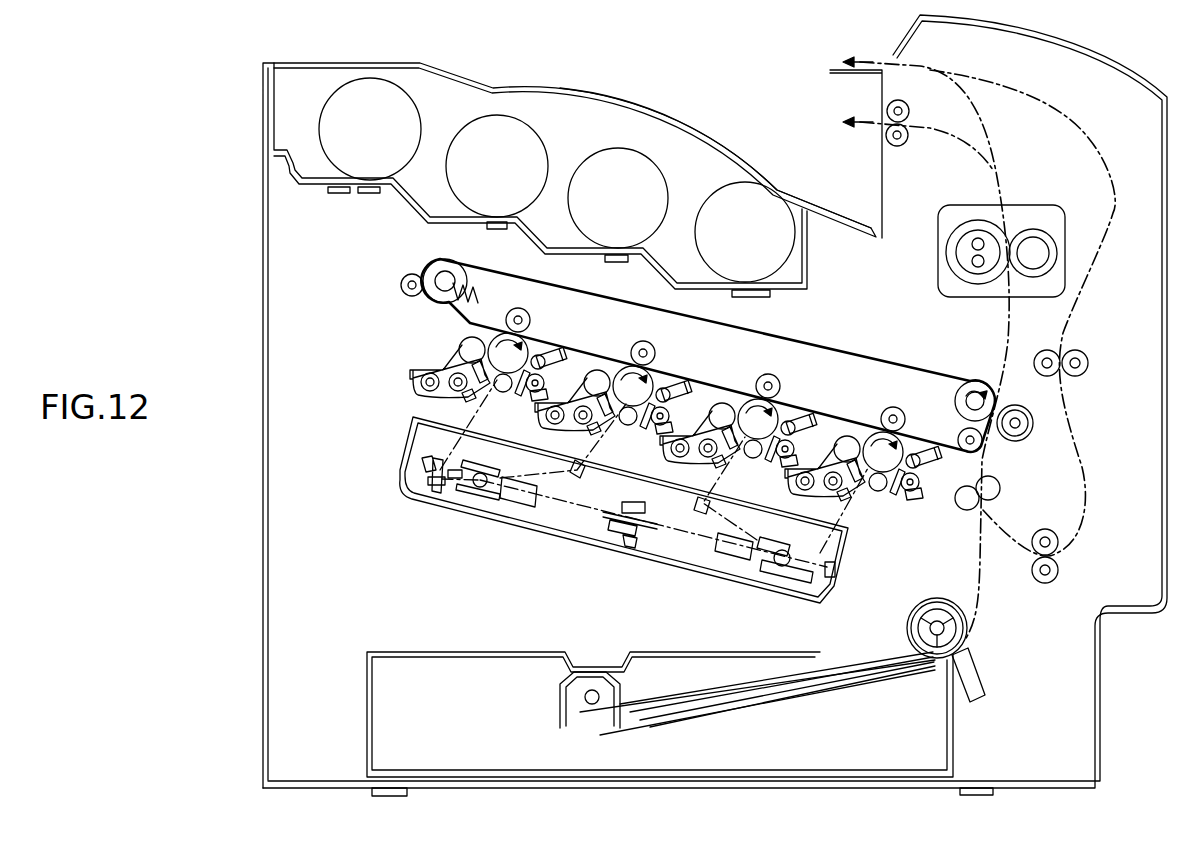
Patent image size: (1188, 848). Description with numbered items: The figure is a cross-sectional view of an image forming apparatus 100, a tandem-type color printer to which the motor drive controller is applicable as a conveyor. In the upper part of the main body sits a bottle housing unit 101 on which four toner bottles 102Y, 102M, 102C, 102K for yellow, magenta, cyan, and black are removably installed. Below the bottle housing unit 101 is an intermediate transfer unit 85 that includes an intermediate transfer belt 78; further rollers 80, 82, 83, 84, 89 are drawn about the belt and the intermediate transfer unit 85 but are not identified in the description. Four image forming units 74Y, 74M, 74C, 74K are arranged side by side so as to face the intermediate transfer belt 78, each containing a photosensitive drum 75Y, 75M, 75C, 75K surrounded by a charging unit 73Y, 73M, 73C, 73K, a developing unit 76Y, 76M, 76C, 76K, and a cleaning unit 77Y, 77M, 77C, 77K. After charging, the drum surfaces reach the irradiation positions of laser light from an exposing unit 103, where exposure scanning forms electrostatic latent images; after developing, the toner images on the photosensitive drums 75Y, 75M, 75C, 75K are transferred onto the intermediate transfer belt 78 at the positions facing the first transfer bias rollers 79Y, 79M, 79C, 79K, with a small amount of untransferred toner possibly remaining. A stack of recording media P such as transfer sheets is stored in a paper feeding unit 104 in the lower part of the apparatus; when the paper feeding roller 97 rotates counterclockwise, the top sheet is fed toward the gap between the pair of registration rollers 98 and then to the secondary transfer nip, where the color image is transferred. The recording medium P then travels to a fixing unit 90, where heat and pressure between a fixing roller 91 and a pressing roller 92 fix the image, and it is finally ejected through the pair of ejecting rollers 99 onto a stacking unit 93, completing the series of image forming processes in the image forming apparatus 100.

The image forming apparatus 100 is at (289, 41).
The stacking unit 93 is at (630, 88).
The bottle housing unit 101 is at (417, 214).
The toner bottle 102Y is at (420, 116).
The toner bottle 102M is at (533, 130).
The toner bottle 102C is at (620, 149).
The toner bottle 102K is at (711, 196).
The intermediate transfer unit 85 is at (822, 337).
The intermediate transfer belt 78 is at (674, 304).
The tension roller 83 is at (462, 270).
The cleaning roller 80 is at (403, 292).
The drive roller 82 is at (963, 384).
The secondary transfer backup roller 84 is at (984, 447).
The secondary transfer roller 89 is at (1025, 438).
The photosensitive drum 75Y is at (523, 336).
The photosensitive drum 75M is at (650, 372).
The photosensitive drum 75C is at (775, 405).
The photosensitive drum 75K is at (905, 440).
The developing unit 76Y is at (420, 369).
The developing unit 76M is at (563, 400).
The developing unit 76C is at (688, 430).
The developing unit 76K is at (810, 465).
The cleaning unit 77Y is at (548, 352).
The cleaning unit 77M is at (672, 390).
The cleaning unit 77C is at (795, 420).
The cleaning unit 77K is at (925, 470).
The first transfer bias roller 79Y is at (510, 311).
The first transfer bias roller 79M is at (640, 340).
The first transfer bias roller 79C is at (766, 374).
The first transfer bias roller 79K is at (890, 407).
The charging unit 73Y is at (503, 392).
The charging unit 73M is at (630, 426).
The charging unit 73C is at (755, 459).
The charging unit 73K is at (882, 493).
The image forming unit 74Y is at (440, 404).
The image forming unit 74M is at (570, 443).
The image forming unit 74C is at (700, 475).
The image forming unit 74K is at (863, 513).
The exposing unit 103 is at (442, 515).
The fixing unit 90 is at (965, 205).
The fixing roller 91 is at (947, 258).
The pressing roller 92 is at (1033, 229).
The pair of ejecting rollers 99 is at (888, 123).
The pair of registration rollers 98 is at (1000, 492).
The paper feeding roller 97 is at (938, 598).
The paper feeding unit 104 is at (665, 690).
The recording medium P is at (845, 660).